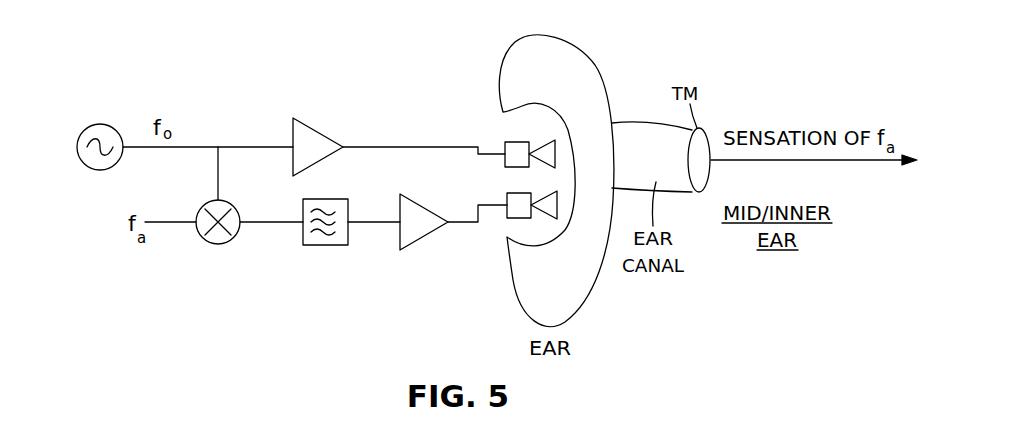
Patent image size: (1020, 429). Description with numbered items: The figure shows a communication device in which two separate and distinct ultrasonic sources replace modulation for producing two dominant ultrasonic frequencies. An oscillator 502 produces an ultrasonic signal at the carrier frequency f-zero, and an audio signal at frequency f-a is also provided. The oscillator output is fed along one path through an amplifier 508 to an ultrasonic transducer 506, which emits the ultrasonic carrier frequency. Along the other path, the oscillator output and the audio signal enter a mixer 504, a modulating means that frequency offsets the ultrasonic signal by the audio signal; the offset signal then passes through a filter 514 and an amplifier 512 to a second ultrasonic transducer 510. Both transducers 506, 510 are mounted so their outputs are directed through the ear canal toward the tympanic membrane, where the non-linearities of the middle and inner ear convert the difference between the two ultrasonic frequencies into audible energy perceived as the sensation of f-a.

The oscillator 502 is at (89, 171).
The mixer 504 is at (222, 245).
The ultrasonic transducer 506 is at (505, 140).
The amplifier 508 is at (306, 117).
The second ultrasonic transducer 510 is at (508, 193).
The amplifier 512 is at (420, 240).
The filter 514 is at (328, 246).